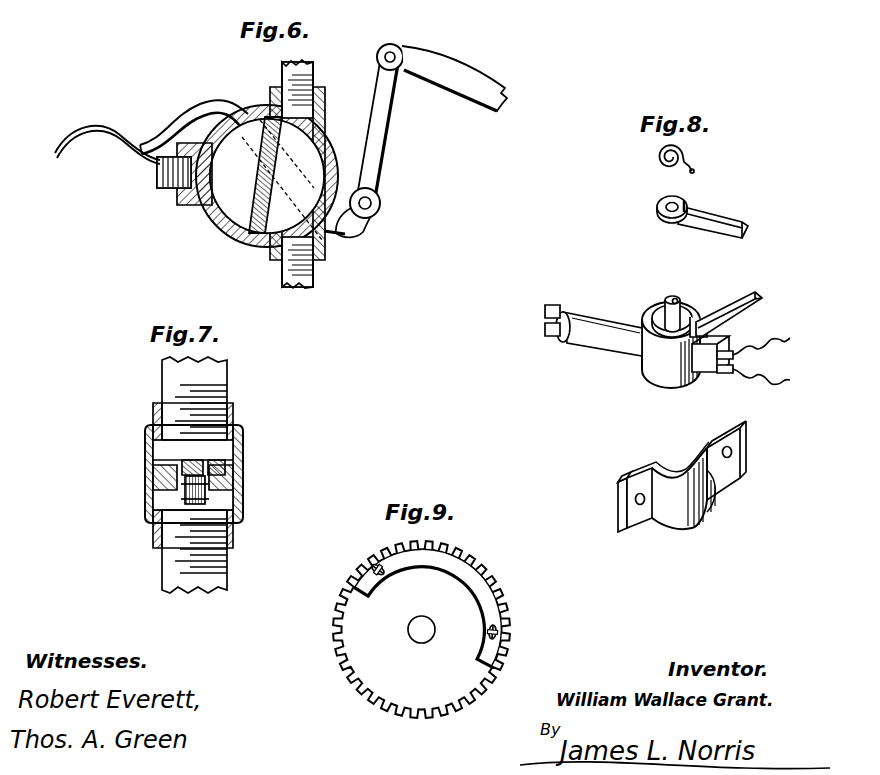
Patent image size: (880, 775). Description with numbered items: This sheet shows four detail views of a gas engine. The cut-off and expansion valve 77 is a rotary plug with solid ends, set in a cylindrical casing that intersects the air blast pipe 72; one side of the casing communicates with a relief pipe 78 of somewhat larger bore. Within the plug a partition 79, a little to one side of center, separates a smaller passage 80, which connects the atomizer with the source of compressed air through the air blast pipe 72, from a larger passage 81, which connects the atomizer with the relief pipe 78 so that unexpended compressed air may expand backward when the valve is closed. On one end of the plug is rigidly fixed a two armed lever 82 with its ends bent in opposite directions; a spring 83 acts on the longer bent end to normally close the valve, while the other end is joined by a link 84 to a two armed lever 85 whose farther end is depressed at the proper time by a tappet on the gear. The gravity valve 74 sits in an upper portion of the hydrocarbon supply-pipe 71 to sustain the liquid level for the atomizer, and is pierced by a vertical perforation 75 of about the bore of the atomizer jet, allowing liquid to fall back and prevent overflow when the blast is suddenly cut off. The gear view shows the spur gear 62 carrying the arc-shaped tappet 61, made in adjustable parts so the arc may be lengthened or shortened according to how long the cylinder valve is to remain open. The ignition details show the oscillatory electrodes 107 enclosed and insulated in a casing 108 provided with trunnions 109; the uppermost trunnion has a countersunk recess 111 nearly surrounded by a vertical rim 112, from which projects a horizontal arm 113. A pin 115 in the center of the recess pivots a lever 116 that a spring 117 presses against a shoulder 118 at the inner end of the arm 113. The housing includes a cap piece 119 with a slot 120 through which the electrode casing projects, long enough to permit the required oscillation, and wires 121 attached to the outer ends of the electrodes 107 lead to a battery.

In FIG. 9, the arc-shaped cam projection or tappet 61 is at (488, 592).
In FIG. 9, the spur gear 62 is at (421, 629).
In FIG. 7, the hydrocarbon supply-pipe 71 is at (226, 379).
In FIG. 6, the air blast pipe 72 is at (314, 72).
In FIG. 7, the gravity valve 74 is at (172, 470).
In FIG. 7, the vertical perforation or passage 75 is at (234, 466).
In FIG. 6, the cut-off and expansion valve 77 is at (222, 228).
In FIG. 6, the relief pipe 78 is at (157, 190).
In FIG. 6, the partition 79 is at (253, 175).
In FIG. 6, the passage 80 is at (267, 176).
In FIG. 6, the passage 81 is at (268, 180).
In FIG. 6, the two armed lever 82 is at (175, 133).
In FIG. 6, the spring 83 is at (92, 128).
In FIG. 6, the link 84 is at (378, 170).
In FIG. 6, the two armed lever 85 is at (478, 62).
In FIG. 8, the oscillatory electrodes 107 is at (544, 320).
In FIG. 8, the casing or holder 108 is at (592, 322).
In FIG. 8, the trunnions 109 is at (722, 350).
In FIG. 8, the recess or countersunk space 111 is at (642, 352).
In FIG. 8, the vertical rim 112 is at (656, 314).
In FIG. 8, the horizontally extended arm 113 is at (748, 302).
In FIG. 8, the pin or stud 115 is at (678, 298).
In FIG. 8, the lever 116 is at (746, 208).
In FIG. 8, the spring 117 is at (658, 159).
In FIG. 8, the shoulder 118 is at (688, 322).
In FIG. 8, the cap piece 119 is at (663, 487).
In FIG. 8, the slot 120 is at (716, 493).
In FIG. 8, the wires or conductors 121 is at (754, 361).